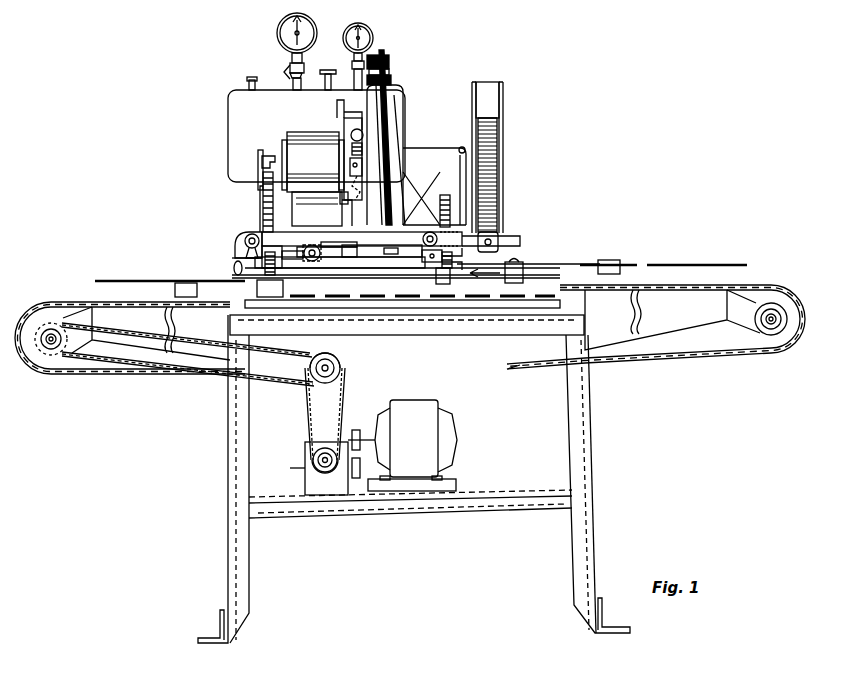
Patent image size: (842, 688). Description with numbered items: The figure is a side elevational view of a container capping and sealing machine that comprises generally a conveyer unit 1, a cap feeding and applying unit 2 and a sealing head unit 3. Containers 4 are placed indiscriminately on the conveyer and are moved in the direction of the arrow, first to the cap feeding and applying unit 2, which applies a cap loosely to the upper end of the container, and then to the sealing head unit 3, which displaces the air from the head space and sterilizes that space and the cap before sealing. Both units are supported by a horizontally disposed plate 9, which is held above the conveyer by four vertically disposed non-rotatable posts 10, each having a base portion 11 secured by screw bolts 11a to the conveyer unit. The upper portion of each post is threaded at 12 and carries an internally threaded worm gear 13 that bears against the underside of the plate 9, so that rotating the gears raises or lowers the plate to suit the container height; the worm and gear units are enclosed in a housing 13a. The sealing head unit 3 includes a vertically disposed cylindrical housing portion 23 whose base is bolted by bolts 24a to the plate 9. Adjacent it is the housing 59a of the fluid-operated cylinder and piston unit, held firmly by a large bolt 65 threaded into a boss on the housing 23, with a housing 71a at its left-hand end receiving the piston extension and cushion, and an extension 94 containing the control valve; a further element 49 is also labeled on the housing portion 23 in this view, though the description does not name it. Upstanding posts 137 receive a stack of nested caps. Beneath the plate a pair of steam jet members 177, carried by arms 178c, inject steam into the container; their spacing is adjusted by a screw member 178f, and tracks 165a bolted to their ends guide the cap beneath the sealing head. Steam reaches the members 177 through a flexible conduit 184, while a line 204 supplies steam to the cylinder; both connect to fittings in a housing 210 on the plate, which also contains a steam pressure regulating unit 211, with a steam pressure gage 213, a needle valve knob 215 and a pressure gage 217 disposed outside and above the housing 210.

The conveyer unit 1 is at (228, 435).
The cap feeding and applying unit 2 is at (503, 168).
The sealing head unit 3 is at (390, 142).
The containers 4 is at (528, 280).
The plate 9 is at (520, 240).
The posts 10 is at (239, 268).
The base portion 11 is at (452, 284).
The screw bolts 11a is at (436, 284).
The threaded portion 12 is at (228, 228).
The worm gear 13 is at (264, 226).
The housing 13a is at (234, 252).
The cylindrical housing portion 23 is at (378, 107).
The bolts 24a is at (446, 195).
The cam follower 49 is at (360, 167).
The housing 59a is at (306, 135).
The large bolt 65 is at (352, 118).
The housing 71a is at (265, 156).
The extension 94 is at (345, 200).
The upstanding posts 137 is at (504, 108).
The tracks 165a is at (430, 268).
The steam jet members 177 is at (386, 268).
The arms 178c is at (344, 268).
The screw member 178f is at (311, 262).
The flexible conduit 184 is at (348, 226).
The line 204 is at (450, 147).
The housing 210 is at (234, 104).
The steam pressure regulating unit 211 is at (252, 80).
The steam pressure gage 213 is at (277, 26).
The rotatable knob 215 is at (328, 70).
The pressure gage 217 is at (365, 32).